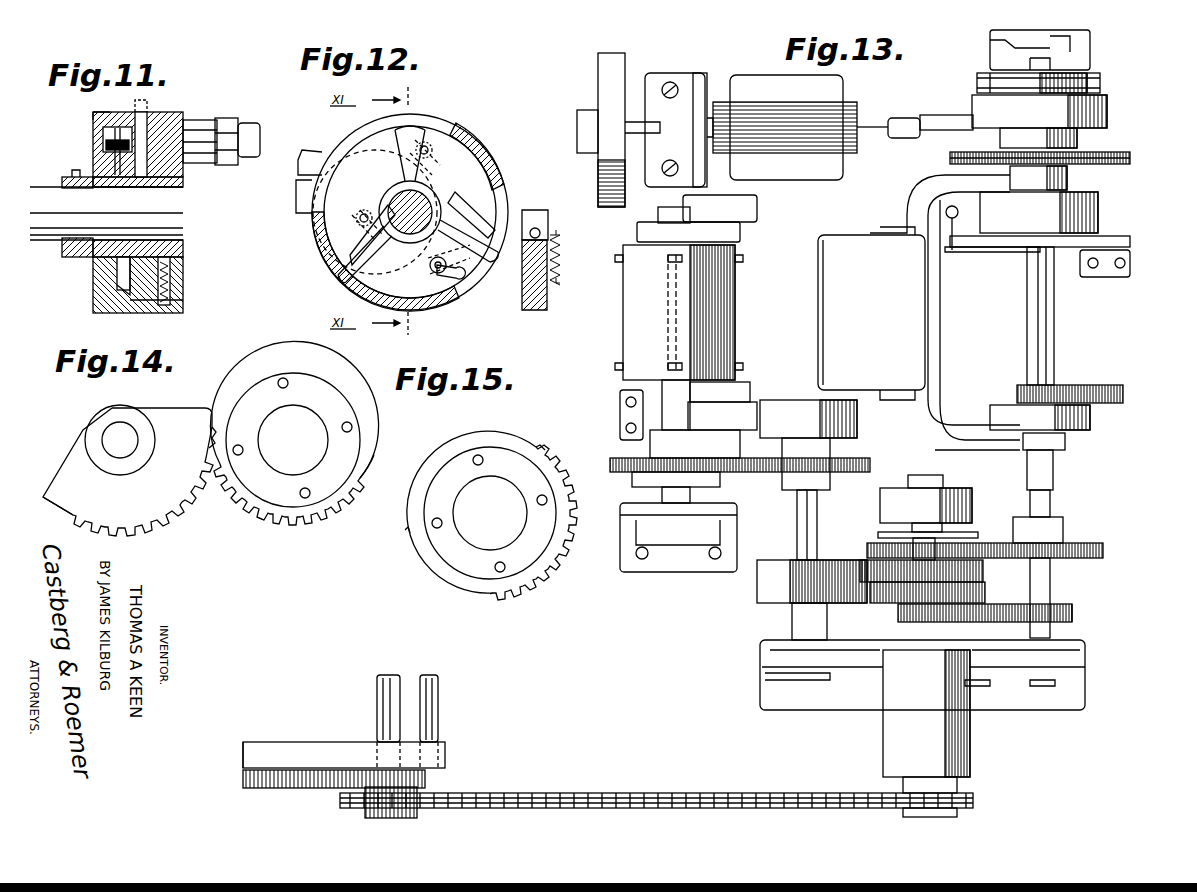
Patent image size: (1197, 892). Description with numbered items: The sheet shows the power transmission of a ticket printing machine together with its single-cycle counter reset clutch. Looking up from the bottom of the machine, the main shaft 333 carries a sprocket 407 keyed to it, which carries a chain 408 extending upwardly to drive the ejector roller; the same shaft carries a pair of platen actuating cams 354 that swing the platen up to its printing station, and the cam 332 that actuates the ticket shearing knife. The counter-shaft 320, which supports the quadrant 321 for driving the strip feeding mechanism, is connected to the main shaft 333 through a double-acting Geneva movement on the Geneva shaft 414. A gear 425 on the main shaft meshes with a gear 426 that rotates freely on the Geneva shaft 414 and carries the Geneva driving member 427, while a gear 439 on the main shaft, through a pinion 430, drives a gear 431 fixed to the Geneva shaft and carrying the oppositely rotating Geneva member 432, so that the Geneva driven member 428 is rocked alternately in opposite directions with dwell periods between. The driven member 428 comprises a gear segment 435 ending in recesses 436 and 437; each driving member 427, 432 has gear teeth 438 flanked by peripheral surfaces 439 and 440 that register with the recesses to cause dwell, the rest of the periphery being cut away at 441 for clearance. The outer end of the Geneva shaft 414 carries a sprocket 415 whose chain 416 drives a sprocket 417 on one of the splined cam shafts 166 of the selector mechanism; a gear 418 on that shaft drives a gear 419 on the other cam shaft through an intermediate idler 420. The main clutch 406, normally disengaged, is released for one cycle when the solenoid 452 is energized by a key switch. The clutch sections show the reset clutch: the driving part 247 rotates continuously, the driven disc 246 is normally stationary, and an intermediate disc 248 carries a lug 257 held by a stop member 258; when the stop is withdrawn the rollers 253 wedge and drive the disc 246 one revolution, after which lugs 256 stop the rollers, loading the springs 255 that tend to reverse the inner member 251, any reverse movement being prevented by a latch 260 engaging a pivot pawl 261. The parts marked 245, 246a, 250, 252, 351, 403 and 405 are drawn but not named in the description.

In FIG. 13, the splined cam shafts 166 is at (377, 703).
In FIG. 11, the nut 245 is at (238, 124).
In FIG. 11, the disc 246 is at (183, 175).
In FIG. 12, the disc 246 is at (300, 228).
In FIG. 11, the spring 246a is at (175, 270).
In FIG. 11, the driving part 247 is at (100, 112).
In FIG. 12, the driving part 247 is at (468, 130).
In FIG. 11, the intermediate disc 248 is at (140, 313).
In FIG. 11, the shaft 250 is at (185, 205).
In FIG. 12, the shaft 250 is at (462, 160).
In FIG. 11, the inner member 251 is at (128, 190).
In FIG. 12, the inner member 251 is at (452, 185).
In FIG. 11, the pawl 252 is at (150, 112).
In FIG. 12, the pawl 252 is at (365, 293).
In FIG. 11, the rollers 253 is at (103, 137).
In FIG. 12, the rollers 253 is at (380, 290).
In FIG. 11, the springs 255 is at (114, 157).
In FIG. 12, the springs 255 is at (330, 248).
In FIG. 11, the lugs 256 is at (105, 293).
In FIG. 12, the lugs 256 is at (440, 150).
In FIG. 12, the lug 257 is at (322, 152).
In FIG. 12, the stop member 258 is at (296, 197).
In FIG. 12, the latch 260 is at (548, 215).
In FIG. 12, the pivot pawl 261 is at (562, 240).
In FIG. 14, the counter-shaft 320 is at (122, 425).
In FIG. 13, the counter-shaft 320 is at (817, 545).
In FIG. 13, the quadrant 321 is at (855, 458).
In FIG. 13, the cam 332 is at (1075, 385).
In FIG. 13, the main shaft 333 is at (1027, 320).
In FIG. 13, the solenoid 351 is at (820, 235).
In FIG. 13, the platen actuating cams 354 is at (1067, 181).
In FIG. 13, the gear 403 is at (1100, 78).
In FIG. 13, the housing 405 is at (1080, 60).
In FIG. 13, the main clutch 406 is at (1107, 110).
In FIG. 13, the sprocket 407 is at (1112, 152).
In FIG. 13, the chain 408 is at (1132, 155).
In FIG. 14, the Geneva shaft 414 is at (295, 405).
In FIG. 15, the Geneva shaft 414 is at (492, 480).
In FIG. 13, the Geneva shaft 414 is at (950, 535).
In FIG. 13, the sprocket 415 is at (962, 793).
In FIG. 13, the chain 416 is at (725, 793).
In FIG. 13, the sprocket 417 is at (420, 790).
In FIG. 13, the gear 418 is at (425, 768).
In FIG. 13, the gear 419 is at (270, 785).
In FIG. 13, the intermediate idler 420 is at (318, 785).
In FIG. 13, the gear 425 is at (1100, 543).
In FIG. 13, the gear 426 is at (875, 530).
In FIG. 15, the Geneva driving member 427 is at (462, 565).
In FIG. 13, the Geneva driving member 427 is at (983, 572).
In FIG. 14, the Geneva driven member 428 is at (80, 440).
In FIG. 13, the Geneva driven member 428 is at (782, 552).
In FIG. 13, the pinion 430 is at (1010, 600).
In FIG. 13, the gear 431 is at (903, 625).
In FIG. 14, the Geneva driving member 432 is at (335, 480).
In FIG. 15, the Geneva driving member 432 is at (492, 515).
In FIG. 13, the Geneva driving member 432 is at (985, 592).
In FIG. 14, the gear segment 435 is at (155, 522).
In FIG. 14, the recess 436 is at (210, 429).
In FIG. 14, the recess 437 is at (68, 520).
In FIG. 14, the gear teeth 438 is at (263, 530).
In FIG. 15, the gear teeth 438 is at (515, 592).
In FIG. 14, the peripheral surface 439 is at (238, 365).
In FIG. 15, the peripheral surface 439 is at (412, 558).
In FIG. 13, the peripheral surface 439 is at (1075, 612).
In FIG. 14, the peripheral surface 440 is at (340, 520).
In FIG. 15, the peripheral surface 440 is at (550, 455).
In FIG. 14, the cut-away clearance 441 is at (335, 370).
In FIG. 15, the cut-away clearance 441 is at (460, 432).
In FIG. 13, the solenoid 452 is at (762, 92).